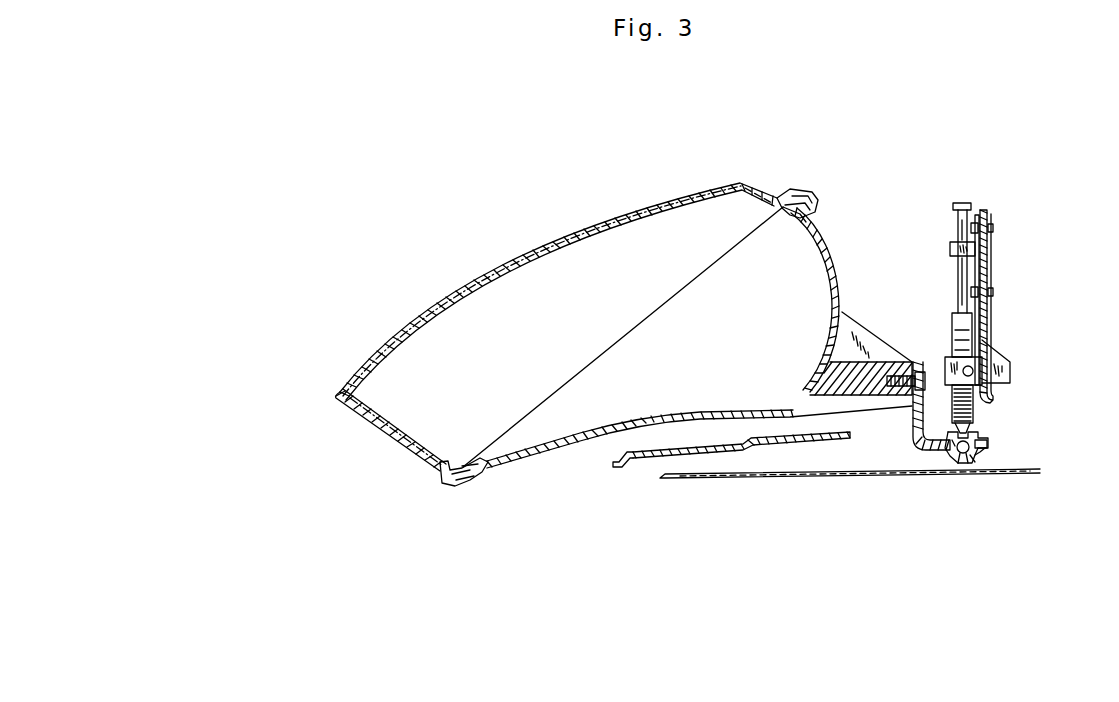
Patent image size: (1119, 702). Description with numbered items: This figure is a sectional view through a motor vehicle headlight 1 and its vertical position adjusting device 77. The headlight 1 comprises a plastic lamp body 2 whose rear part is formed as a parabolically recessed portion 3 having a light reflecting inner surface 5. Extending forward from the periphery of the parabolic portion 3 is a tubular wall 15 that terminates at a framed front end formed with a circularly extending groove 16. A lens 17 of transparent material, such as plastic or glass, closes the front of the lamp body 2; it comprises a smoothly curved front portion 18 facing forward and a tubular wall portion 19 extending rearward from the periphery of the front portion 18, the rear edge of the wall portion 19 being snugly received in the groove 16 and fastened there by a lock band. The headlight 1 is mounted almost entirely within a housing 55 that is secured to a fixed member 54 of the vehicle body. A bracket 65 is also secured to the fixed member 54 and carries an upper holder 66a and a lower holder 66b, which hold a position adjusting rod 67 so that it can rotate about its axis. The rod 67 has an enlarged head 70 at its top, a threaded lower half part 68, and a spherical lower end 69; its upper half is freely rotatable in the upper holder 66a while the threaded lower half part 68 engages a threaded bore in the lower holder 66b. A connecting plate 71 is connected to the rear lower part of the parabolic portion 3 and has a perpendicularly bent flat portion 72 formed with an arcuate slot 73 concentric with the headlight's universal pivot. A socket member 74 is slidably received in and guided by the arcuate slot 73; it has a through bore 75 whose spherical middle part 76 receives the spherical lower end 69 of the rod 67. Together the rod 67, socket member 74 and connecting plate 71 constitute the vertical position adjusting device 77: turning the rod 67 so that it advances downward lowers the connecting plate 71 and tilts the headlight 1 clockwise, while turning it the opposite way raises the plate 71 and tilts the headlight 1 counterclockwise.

The headlight 1 is at (370, 197).
The lamp body 2 is at (820, 233).
The parabolically recessed portion 3 is at (828, 262).
The light reflecting inner surface 5 is at (818, 252).
The tubular wall 15 is at (522, 460).
The circularly extending groove 16 is at (790, 190).
The lens 17 is at (453, 300).
The smoothly curved front portion 18 is at (520, 258).
The tubular wall portion 19 is at (383, 432).
The fixed member 54 is at (700, 477).
The housing 55 is at (640, 457).
The bracket 65 is at (980, 270).
The upper holder 66a is at (952, 243).
The lower holder 66b is at (945, 370).
The position adjusting rod 67 is at (970, 217).
The threaded lower half part 68 is at (980, 410).
The spherical lower end 69 is at (958, 460).
The enlarged head 70 is at (962, 203).
The connecting plate 71 is at (915, 408).
The perpendicularly bent flat portion 72 is at (987, 445).
The arcuate slot 73 is at (950, 458).
The socket member 74 is at (977, 433).
The through bore 75 is at (958, 462).
The spherical middle part 76 is at (965, 462).
The vertical position adjusting device 77 is at (980, 458).